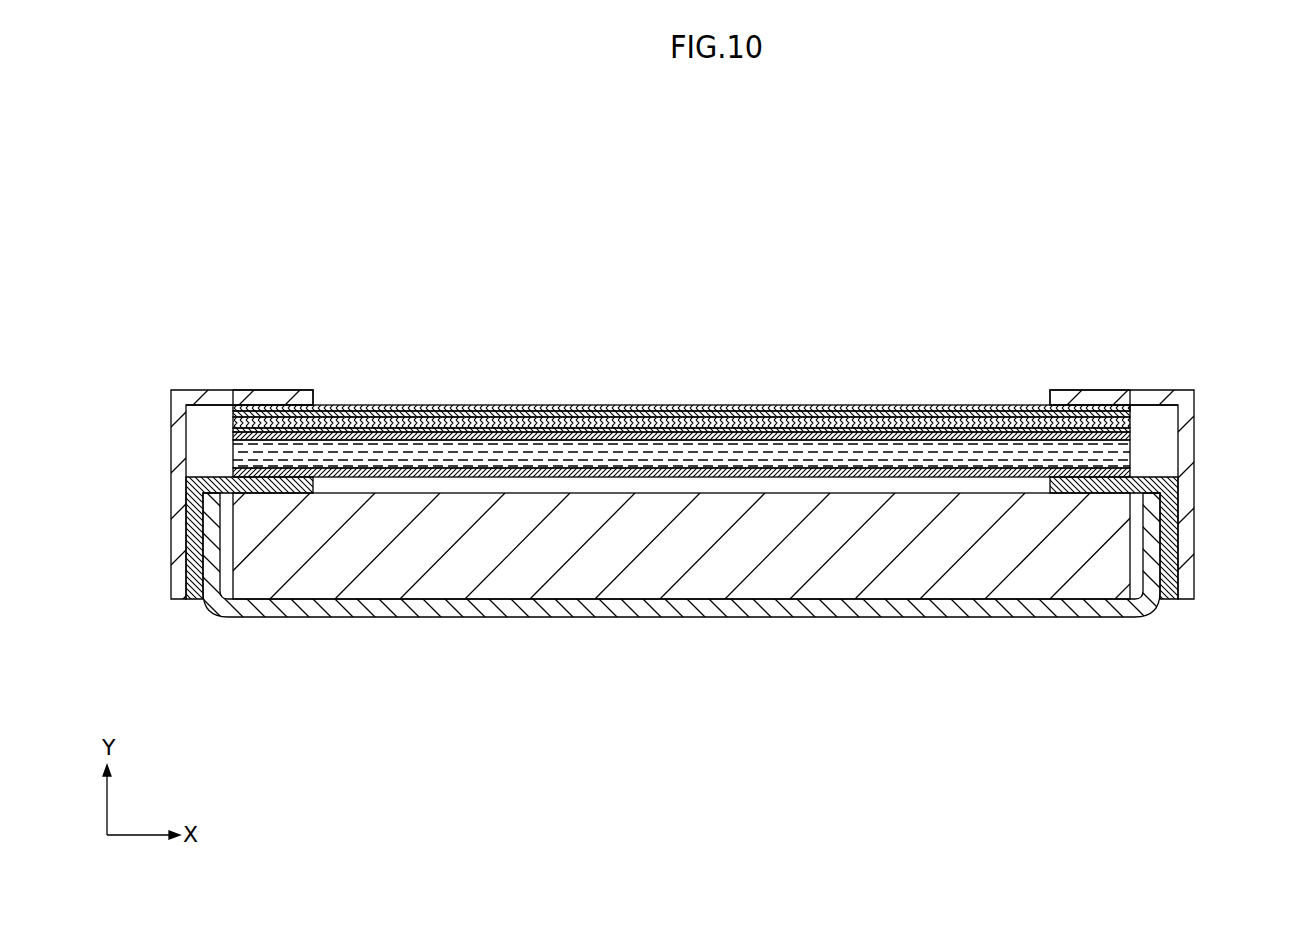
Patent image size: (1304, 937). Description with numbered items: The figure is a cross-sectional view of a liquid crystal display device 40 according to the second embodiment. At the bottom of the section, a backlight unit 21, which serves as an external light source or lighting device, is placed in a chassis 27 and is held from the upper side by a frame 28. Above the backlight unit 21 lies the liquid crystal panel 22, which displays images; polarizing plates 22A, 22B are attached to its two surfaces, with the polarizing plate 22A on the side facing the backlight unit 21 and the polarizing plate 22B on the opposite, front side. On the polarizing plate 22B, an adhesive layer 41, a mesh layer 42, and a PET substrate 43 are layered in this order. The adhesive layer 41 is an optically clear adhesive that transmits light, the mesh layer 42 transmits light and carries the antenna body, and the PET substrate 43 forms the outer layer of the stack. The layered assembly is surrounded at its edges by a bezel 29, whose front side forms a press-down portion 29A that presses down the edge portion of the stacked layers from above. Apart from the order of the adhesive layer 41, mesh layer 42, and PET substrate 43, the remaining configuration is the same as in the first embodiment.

The liquid crystal display device 40 is at (828, 215).
The bezel 29 is at (177, 394).
The press-down portion 29A is at (263, 393).
The frame 28 is at (210, 484).
The chassis 27 is at (813, 610).
The backlight unit 21 is at (702, 575).
The liquid crystal panel 22 is at (1131, 458).
The polarizing plate 22A is at (1131, 470).
The polarizing plate 22B is at (1131, 437).
The adhesive layer 41 is at (1131, 423).
The mesh layer 42 is at (1131, 420).
The PET substrate 43 is at (1138, 405).